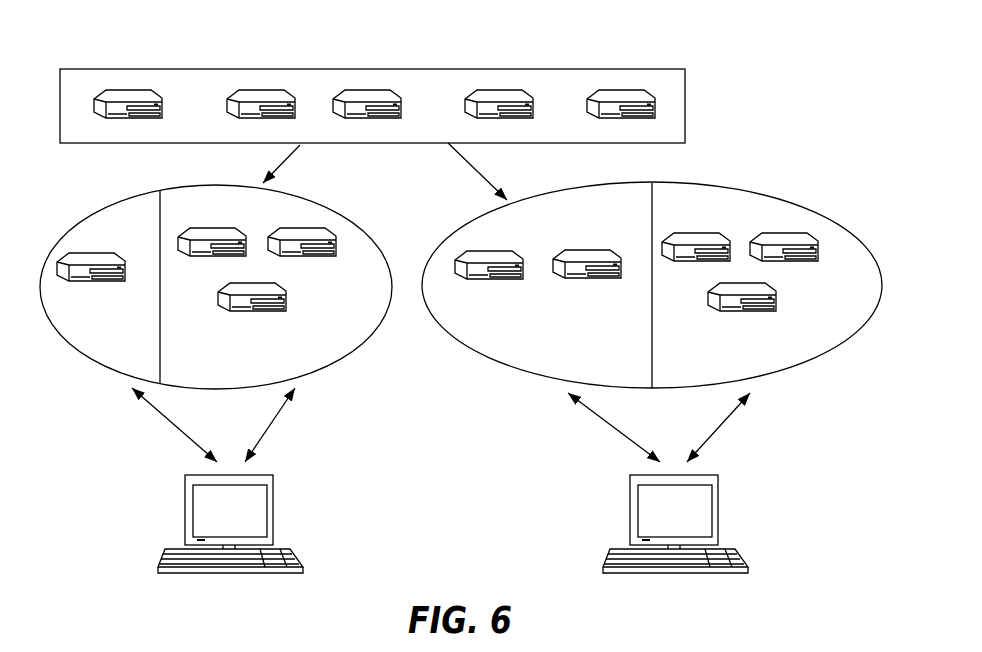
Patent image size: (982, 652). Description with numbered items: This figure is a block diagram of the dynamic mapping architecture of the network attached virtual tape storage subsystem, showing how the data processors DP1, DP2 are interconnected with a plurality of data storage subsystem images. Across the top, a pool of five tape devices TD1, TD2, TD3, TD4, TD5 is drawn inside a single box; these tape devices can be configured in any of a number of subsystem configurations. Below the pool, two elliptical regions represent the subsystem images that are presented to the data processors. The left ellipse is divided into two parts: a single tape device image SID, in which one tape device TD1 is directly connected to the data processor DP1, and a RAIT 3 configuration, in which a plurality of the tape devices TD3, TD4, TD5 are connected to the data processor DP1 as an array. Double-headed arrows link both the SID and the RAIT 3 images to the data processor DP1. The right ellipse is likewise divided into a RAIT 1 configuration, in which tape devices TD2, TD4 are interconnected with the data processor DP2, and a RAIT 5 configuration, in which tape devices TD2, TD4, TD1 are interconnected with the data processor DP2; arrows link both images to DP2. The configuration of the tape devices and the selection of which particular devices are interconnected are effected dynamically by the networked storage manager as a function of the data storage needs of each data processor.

The tape device TD1 is at (126, 90).
The tape device TD2 is at (253, 90).
The tape device TD3 is at (365, 90).
The tape device TD4 is at (495, 90).
The tape device TD5 is at (625, 90).
The single tape device image SID is at (98, 294).
The RAIT 3 configuration RAIT 3 is at (257, 293).
The RAIT 1 configuration RAIT 1 is at (538, 292).
The RAIT 5 configuration RAIT 5 is at (740, 294).
The data processor DP1 is at (185, 512).
The data processor DP2 is at (718, 505).